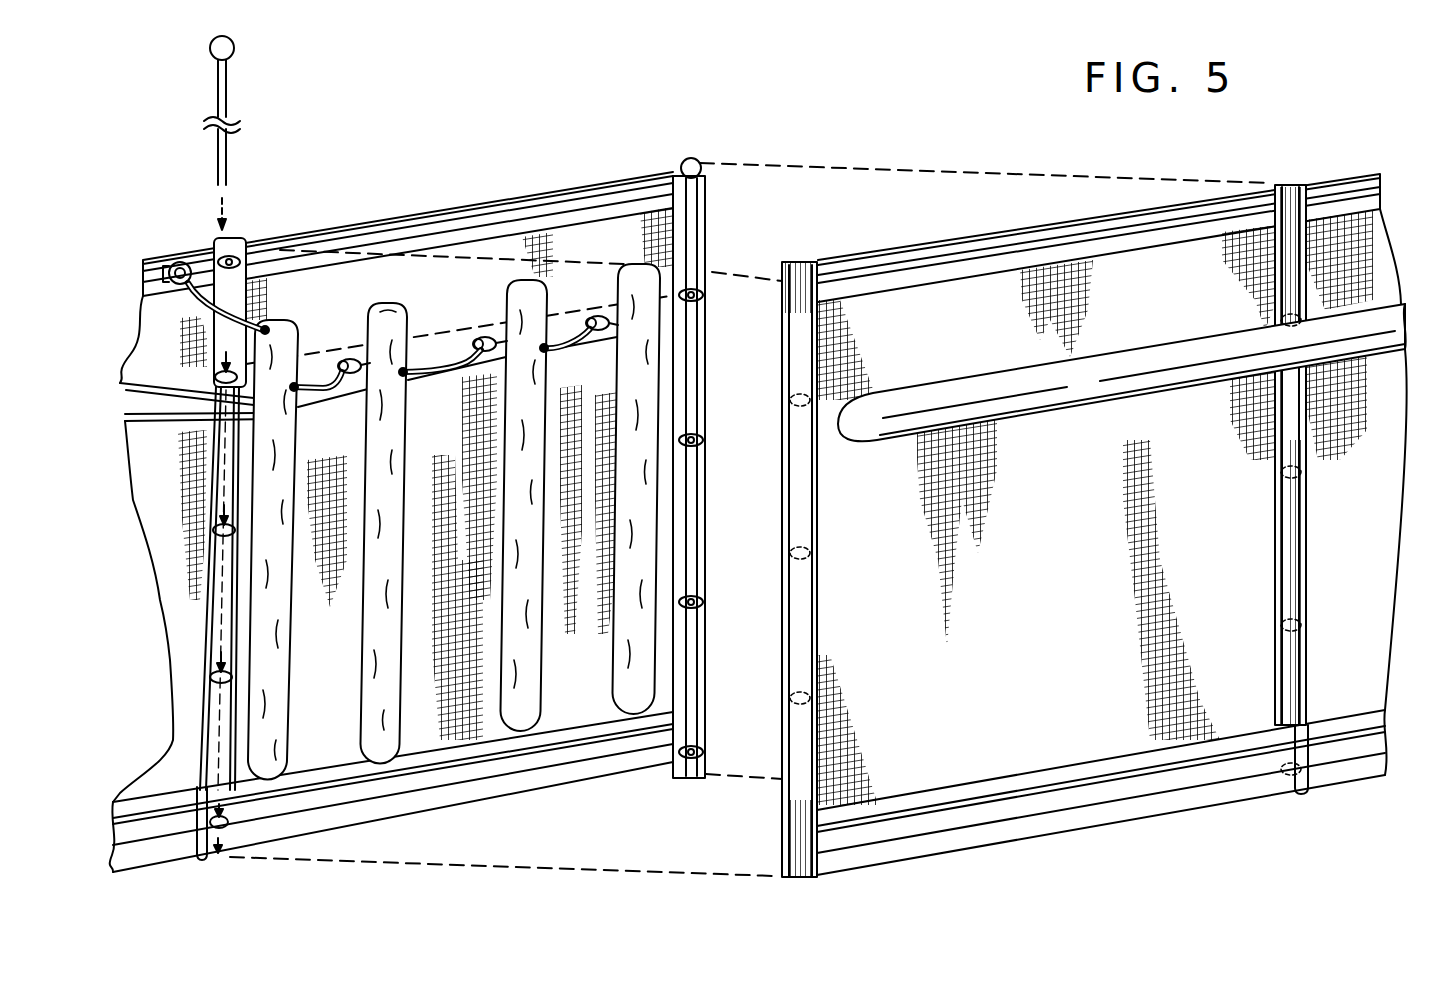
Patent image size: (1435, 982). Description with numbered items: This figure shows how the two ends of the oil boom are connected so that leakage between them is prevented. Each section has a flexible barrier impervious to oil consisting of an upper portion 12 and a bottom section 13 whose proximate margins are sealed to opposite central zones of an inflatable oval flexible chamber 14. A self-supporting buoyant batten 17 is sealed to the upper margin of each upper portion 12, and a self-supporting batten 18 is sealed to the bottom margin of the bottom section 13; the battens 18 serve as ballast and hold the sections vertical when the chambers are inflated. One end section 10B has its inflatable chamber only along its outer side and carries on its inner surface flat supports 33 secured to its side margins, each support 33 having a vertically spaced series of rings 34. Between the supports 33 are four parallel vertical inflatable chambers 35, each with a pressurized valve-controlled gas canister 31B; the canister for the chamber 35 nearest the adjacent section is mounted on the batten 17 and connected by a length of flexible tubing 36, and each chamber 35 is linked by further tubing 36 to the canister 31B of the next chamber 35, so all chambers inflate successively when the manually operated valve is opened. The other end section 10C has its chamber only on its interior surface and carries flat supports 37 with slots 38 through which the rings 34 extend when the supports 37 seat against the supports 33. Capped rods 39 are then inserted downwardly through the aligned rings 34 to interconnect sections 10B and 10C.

The end section 10B is at (475, 180).
The other end section 10C is at (973, 221).
The upper portion 12 is at (1188, 298).
The bottom section 13 is at (177, 660).
The inflatable oval flexible chamber 14 is at (142, 410).
The buoyant batten 17 is at (366, 237).
The batten 18 is at (556, 764).
The gas canister 31B is at (179, 262).
The flat support 33 is at (200, 735).
The ring 34 is at (247, 272).
The vertical inflatable chamber 35 is at (360, 707).
The flexible tubing 36 is at (572, 387).
The flat support 37 is at (789, 354).
The slot 38 is at (815, 557).
The capped rod 39 is at (230, 82).